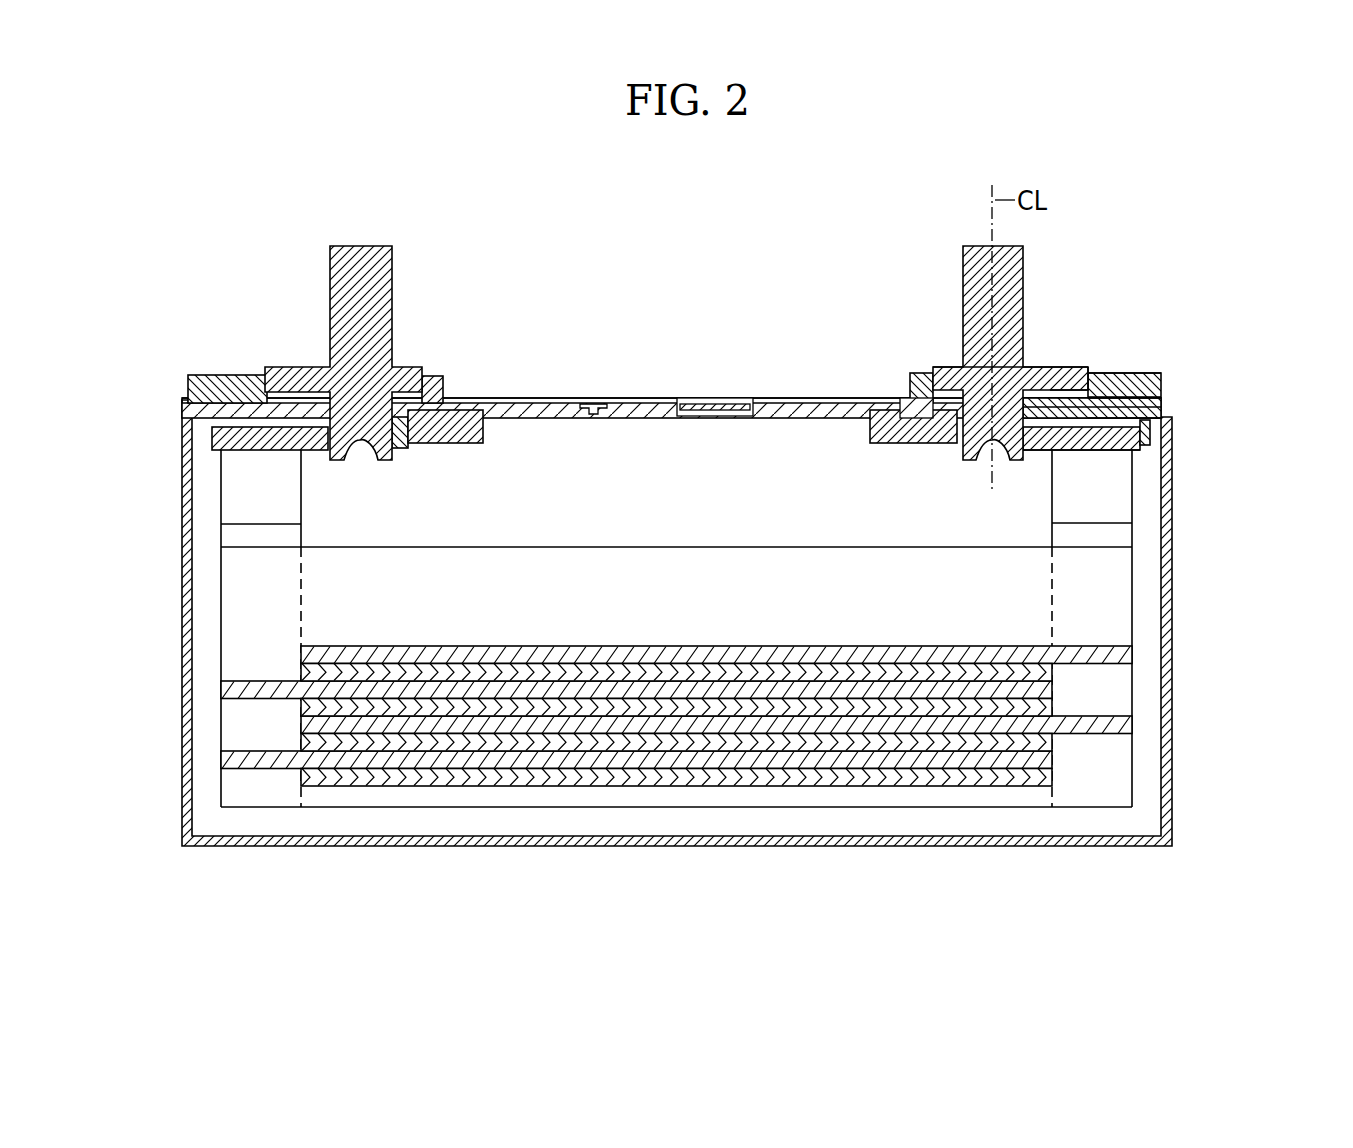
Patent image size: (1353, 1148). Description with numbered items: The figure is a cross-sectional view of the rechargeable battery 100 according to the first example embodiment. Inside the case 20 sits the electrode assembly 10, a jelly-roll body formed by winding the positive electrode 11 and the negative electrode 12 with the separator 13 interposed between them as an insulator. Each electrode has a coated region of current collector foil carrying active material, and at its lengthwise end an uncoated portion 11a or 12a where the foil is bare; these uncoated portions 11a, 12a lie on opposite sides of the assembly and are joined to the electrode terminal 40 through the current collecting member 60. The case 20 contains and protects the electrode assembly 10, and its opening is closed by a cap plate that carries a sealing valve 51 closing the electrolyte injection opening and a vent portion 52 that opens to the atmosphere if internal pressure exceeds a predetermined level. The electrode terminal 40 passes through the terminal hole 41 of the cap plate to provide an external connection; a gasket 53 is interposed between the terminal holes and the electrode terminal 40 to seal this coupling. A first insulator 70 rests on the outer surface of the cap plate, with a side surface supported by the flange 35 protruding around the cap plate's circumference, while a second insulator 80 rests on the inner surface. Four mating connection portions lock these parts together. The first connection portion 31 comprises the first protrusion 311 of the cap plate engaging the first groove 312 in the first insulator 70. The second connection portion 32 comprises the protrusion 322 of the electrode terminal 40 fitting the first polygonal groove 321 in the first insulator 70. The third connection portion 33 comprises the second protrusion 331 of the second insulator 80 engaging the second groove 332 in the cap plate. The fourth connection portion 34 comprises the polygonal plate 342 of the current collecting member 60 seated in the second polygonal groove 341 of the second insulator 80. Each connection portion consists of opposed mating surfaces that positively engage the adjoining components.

The rechargeable battery 100 is at (693, 212).
The electrode assembly 10 is at (646, 546).
The positive electrode 11 is at (440, 760).
The uncoated portion 11a is at (258, 763).
The negative electrode 12 is at (503, 726).
The uncoated portion 12a is at (1093, 729).
The separator 13 is at (709, 710).
The case 20 is at (1168, 620).
The first connection portion 31 is at (1175, 306).
The first protrusion 311 is at (1118, 393).
The first groove 312 is at (1115, 385).
The second connection portion 32 is at (1095, 319).
The first polygonal groove 321 is at (1072, 383).
The protrusion 322 is at (1108, 372).
The third connection portion 33 is at (1154, 402).
The second protrusion 331 is at (1160, 408).
The second groove 332 is at (1140, 398).
The fourth connection portion 34 is at (1165, 484).
The second polygonal groove 341 is at (1090, 445).
The polygonal plate 342 is at (1073, 448).
The flange 35 is at (637, 400).
The electrode terminal 40 is at (1020, 329).
The terminal hole 41 is at (906, 403).
The sealing valve 51 is at (585, 403).
The vent portion 52 is at (710, 402).
The gasket 53 is at (956, 372).
The current collecting member 60 is at (1040, 503).
The first insulator 70 is at (903, 362).
The second insulator 80 is at (855, 448).